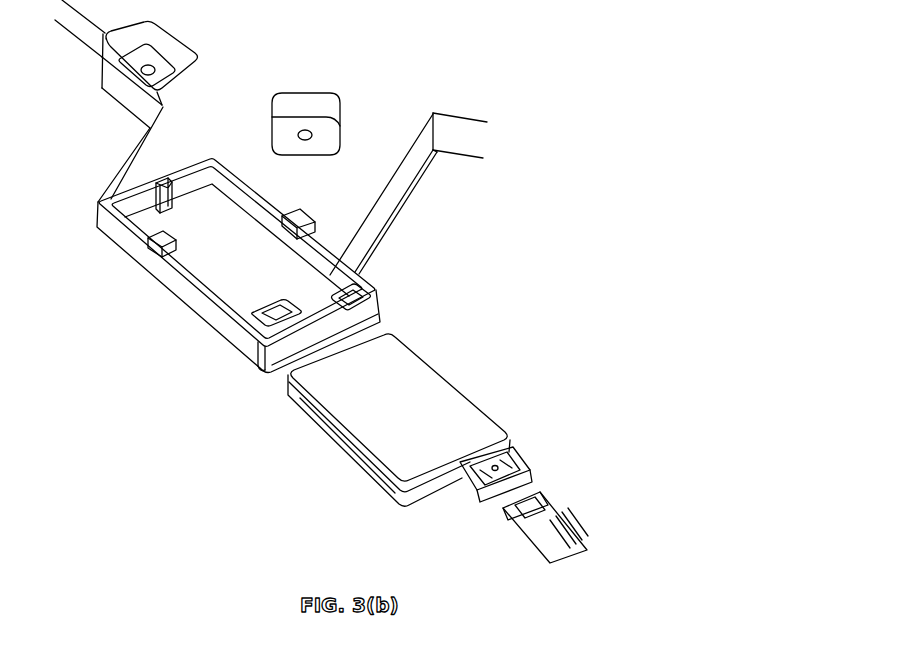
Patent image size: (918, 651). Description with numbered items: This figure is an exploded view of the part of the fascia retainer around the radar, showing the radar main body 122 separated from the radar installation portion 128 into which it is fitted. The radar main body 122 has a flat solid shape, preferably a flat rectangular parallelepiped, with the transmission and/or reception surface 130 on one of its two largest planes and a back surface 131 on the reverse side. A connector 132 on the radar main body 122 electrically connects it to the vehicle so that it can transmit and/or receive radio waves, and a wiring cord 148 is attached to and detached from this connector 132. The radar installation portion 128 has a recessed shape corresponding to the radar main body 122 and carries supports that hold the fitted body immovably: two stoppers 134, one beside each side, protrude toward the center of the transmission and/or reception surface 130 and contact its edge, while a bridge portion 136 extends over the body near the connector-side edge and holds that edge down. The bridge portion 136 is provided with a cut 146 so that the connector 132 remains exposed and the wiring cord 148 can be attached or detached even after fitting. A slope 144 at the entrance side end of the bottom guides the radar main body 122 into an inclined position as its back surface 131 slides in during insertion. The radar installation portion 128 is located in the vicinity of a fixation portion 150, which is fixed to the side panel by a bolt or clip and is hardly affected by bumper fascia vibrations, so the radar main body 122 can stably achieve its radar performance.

The radar main body 122 is at (478, 398).
The radar installation portion 128 is at (199, 167).
The transmission and/or reception surface 130 is at (411, 397).
The back surface 131 is at (366, 478).
The connector 132 is at (522, 460).
The stopper 134 is at (172, 250).
The bridge portion 136 is at (358, 263).
The slope 144 is at (263, 372).
The cut 146 is at (348, 305).
The wiring cord 148 is at (573, 530).
The fixation portion 150 is at (333, 131).